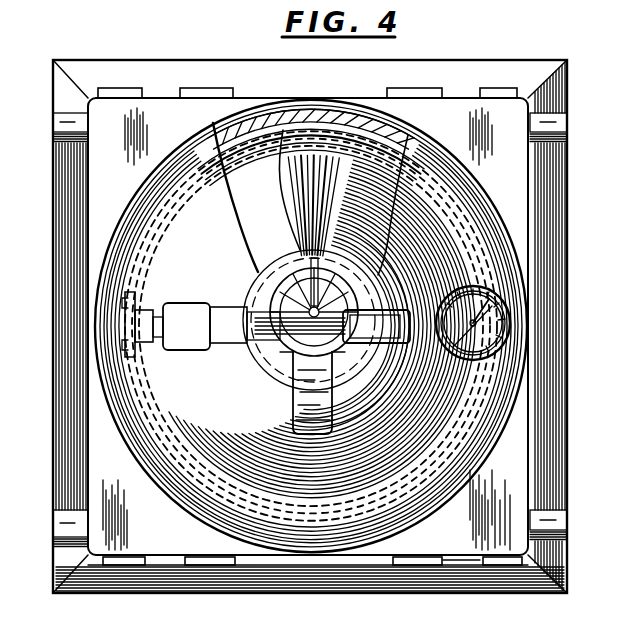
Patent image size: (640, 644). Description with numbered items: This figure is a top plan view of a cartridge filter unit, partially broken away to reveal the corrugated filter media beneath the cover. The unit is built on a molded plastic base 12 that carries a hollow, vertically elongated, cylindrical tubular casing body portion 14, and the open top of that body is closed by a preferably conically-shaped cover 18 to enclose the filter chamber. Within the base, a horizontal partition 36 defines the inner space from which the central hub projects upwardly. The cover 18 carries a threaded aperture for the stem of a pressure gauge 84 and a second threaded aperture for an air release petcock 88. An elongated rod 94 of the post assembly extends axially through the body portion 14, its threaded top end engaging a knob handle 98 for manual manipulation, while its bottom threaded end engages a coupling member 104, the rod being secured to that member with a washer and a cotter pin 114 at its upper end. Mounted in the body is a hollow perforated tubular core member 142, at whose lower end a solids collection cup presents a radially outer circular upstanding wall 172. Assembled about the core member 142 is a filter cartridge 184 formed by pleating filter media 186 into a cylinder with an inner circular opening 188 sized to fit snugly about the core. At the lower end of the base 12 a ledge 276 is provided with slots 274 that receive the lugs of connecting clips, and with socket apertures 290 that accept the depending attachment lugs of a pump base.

The base 12 is at (555, 362).
The casing body portion 14 is at (380, 130).
The cover 18 is at (500, 248).
The horizontal partition 36 is at (515, 463).
The pressure gauge 84 is at (497, 315).
The air release petcock 88 is at (125, 350).
The rod 94 is at (330, 290).
The knob handle 98 is at (300, 400).
The coupling member 104 is at (258, 268).
The cotter pin 114 is at (260, 292).
The tubular core member 142 is at (262, 274).
The upstanding wall 172 is at (213, 123).
The filter cartridge 184 is at (333, 150).
The filter media 186 is at (283, 160).
The inner circular opening 188 is at (285, 258).
The slots 274 is at (120, 92).
The ledge 276 is at (555, 175).
The socket apertures 290 is at (196, 92).